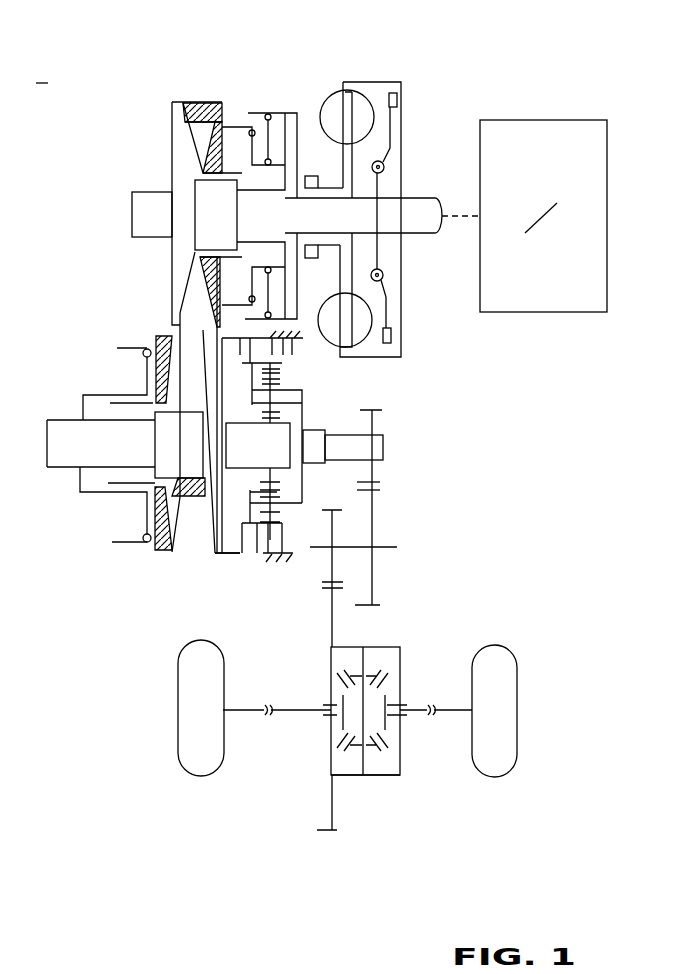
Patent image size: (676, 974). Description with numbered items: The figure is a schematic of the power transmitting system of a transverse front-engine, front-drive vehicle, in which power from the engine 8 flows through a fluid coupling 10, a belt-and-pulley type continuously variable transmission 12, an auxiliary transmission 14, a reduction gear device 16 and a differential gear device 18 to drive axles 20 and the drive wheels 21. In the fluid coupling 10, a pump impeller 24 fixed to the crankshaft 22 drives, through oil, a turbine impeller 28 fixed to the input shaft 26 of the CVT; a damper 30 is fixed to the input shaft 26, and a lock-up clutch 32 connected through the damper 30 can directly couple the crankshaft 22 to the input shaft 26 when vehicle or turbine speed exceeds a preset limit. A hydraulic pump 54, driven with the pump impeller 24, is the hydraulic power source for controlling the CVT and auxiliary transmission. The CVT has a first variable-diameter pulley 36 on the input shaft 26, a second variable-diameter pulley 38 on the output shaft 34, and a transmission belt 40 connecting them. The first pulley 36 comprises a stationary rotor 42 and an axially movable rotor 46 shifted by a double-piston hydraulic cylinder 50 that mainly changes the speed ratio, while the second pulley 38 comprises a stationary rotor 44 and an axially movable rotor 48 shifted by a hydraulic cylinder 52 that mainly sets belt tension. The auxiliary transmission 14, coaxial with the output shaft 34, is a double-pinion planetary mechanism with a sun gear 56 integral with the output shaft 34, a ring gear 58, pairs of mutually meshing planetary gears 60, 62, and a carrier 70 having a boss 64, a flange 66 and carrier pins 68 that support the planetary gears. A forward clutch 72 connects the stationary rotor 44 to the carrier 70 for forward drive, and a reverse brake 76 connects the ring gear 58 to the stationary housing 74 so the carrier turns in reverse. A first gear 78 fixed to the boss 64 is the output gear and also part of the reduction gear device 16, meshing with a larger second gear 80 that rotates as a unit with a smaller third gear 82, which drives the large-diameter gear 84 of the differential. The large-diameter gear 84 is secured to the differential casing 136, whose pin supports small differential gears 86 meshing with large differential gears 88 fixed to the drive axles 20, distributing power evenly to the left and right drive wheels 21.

The engine 8 is at (558, 132).
The fluid coupling 10 is at (349, 55).
The belt-and-pulley type continuously variable transmission 12 is at (124, 106).
The auxiliary transmission 14 is at (216, 585).
The reduction gear device 16 is at (402, 427).
The differential gear device 18 is at (417, 636).
The drive axles 20 is at (298, 712).
The drive wheels 21 is at (202, 765).
The crankshaft 22 is at (420, 234).
The pump impeller 24 is at (330, 106).
The input shaft 26 is at (330, 206).
The turbine impeller 28 is at (364, 106).
The damper 30 is at (385, 166).
The lock-up clutch 32 is at (399, 100).
The output shaft 34 is at (63, 457).
The first variable-diameter pulley 36 is at (172, 84).
The second variable-diameter pulley 38 is at (150, 562).
The transmission belt 40 is at (195, 102).
The stationary rotor 42 is at (172, 153).
The stationary rotor 44 is at (208, 512).
The axially movable rotor 46 is at (223, 102).
The axially movable rotor 48 is at (158, 337).
The hydraulic cylinder 50 is at (233, 130).
The hydraulic cylinder 52 is at (86, 407).
The hydraulic pump 54 is at (311, 258).
The sun gear 56 is at (267, 417).
The ring gear 58 is at (275, 372).
The planetary gear 60 is at (277, 380).
The planetary gear 62 is at (302, 395).
The boss 64 is at (318, 450).
The flange 66 is at (324, 580).
The carrier pins 68 is at (258, 497).
The carrier 70 is at (350, 409).
The forward clutch 72 is at (238, 553).
The stationary housing 74 is at (283, 560).
The reverse brake 76 is at (273, 560).
The first gear 78 is at (378, 483).
The second gear 80 is at (383, 492).
The third gear 82 is at (342, 513).
The large-diameter gear 84 is at (322, 828).
The small differential gears 86 is at (383, 748).
The large differential gears 88 is at (397, 745).
The differential casing 136 is at (385, 777).